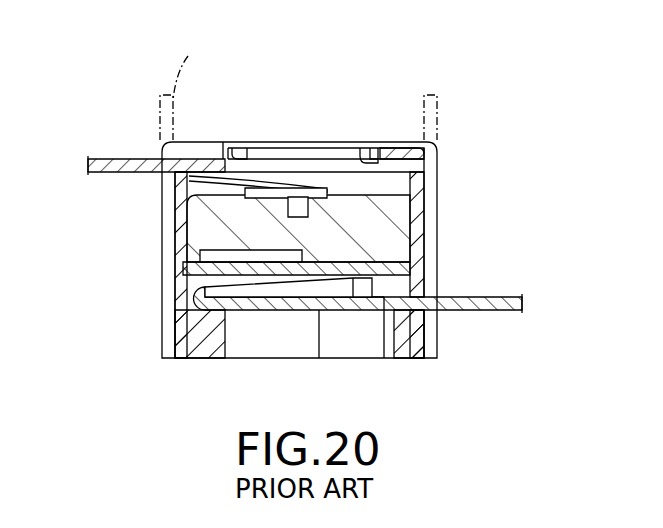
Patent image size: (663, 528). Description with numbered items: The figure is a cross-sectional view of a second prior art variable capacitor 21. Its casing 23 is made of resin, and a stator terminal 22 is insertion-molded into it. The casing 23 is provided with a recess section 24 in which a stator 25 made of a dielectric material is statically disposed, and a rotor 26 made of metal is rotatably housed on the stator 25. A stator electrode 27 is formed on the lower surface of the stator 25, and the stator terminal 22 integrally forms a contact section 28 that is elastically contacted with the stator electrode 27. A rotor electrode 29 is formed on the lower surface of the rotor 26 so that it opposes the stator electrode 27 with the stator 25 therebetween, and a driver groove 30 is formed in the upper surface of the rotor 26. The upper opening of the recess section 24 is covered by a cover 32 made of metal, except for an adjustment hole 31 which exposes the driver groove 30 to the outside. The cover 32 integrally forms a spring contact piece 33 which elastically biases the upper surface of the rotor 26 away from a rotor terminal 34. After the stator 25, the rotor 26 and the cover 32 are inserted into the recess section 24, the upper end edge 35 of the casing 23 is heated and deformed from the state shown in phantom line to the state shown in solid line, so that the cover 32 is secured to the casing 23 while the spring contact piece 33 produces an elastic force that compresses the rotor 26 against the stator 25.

The variable capacitor 21 is at (118, 52).
The stator terminal 22 is at (500, 311).
The casing 23 is at (445, 167).
The recess section 24 is at (408, 188).
The stator 25 is at (190, 265).
The rotor 26 is at (200, 223).
The stator electrode 27 is at (381, 282).
The contact section 28 is at (356, 284).
The rotor electrode 29 is at (390, 252).
The driver groove 30 is at (303, 190).
The adjustment hole 31 is at (246, 152).
The cover 32 is at (388, 160).
The spring contact piece 33 is at (303, 205).
The rotor terminal 34 is at (100, 158).
The upper end edge 35 is at (194, 148).